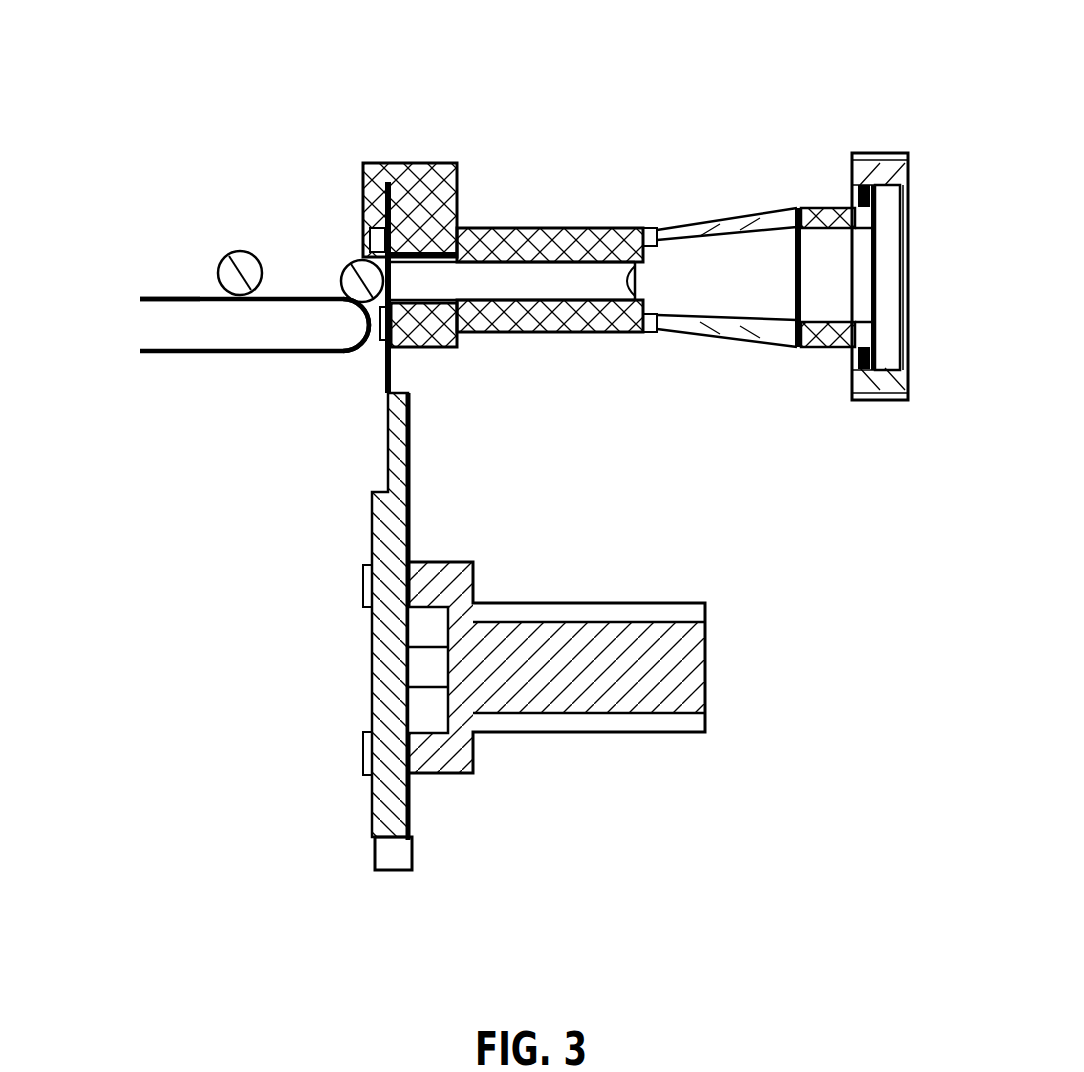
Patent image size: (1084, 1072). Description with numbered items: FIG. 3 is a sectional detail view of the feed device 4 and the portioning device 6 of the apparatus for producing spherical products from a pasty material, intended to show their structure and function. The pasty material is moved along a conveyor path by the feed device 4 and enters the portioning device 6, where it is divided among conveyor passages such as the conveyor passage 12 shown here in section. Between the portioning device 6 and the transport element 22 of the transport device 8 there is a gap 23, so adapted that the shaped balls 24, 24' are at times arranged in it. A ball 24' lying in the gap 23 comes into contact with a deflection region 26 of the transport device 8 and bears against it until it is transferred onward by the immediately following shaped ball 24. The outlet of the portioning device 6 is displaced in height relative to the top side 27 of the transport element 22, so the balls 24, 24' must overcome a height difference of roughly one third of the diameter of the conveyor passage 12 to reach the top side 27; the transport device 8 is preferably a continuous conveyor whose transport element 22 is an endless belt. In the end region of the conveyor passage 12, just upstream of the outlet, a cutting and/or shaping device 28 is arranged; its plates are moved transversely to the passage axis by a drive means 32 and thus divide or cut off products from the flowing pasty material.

The feed device 4 is at (807, 175).
The portioning device 6 is at (500, 183).
The transport device 8 is at (258, 182).
The conveyor passage 12 is at (540, 270).
The transport element 22 is at (205, 355).
The gap 23 is at (364, 349).
The shaped ball 24 is at (231, 211).
The shaped ball 24' is at (354, 202).
The deflection region 26 is at (349, 323).
The top side 27 is at (150, 287).
The cutting and/or shaping device 28 is at (463, 480).
The drive means 32 is at (548, 688).